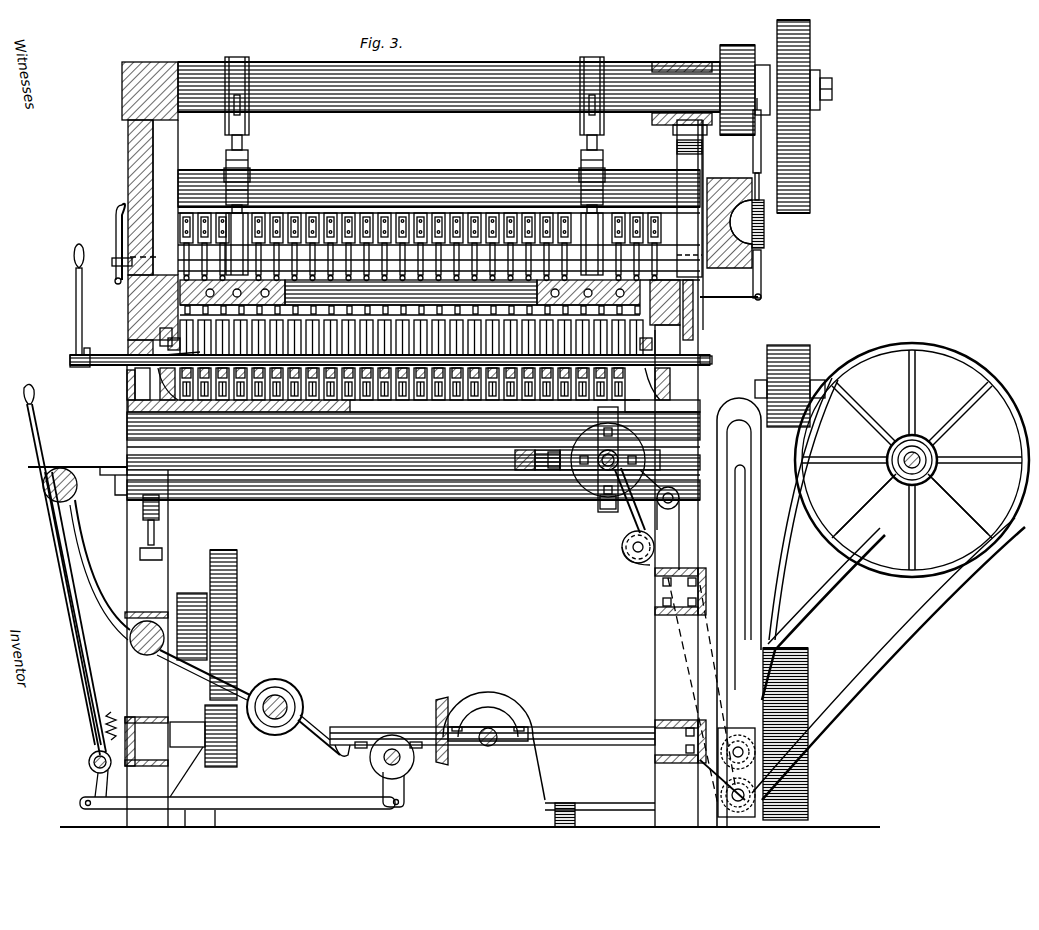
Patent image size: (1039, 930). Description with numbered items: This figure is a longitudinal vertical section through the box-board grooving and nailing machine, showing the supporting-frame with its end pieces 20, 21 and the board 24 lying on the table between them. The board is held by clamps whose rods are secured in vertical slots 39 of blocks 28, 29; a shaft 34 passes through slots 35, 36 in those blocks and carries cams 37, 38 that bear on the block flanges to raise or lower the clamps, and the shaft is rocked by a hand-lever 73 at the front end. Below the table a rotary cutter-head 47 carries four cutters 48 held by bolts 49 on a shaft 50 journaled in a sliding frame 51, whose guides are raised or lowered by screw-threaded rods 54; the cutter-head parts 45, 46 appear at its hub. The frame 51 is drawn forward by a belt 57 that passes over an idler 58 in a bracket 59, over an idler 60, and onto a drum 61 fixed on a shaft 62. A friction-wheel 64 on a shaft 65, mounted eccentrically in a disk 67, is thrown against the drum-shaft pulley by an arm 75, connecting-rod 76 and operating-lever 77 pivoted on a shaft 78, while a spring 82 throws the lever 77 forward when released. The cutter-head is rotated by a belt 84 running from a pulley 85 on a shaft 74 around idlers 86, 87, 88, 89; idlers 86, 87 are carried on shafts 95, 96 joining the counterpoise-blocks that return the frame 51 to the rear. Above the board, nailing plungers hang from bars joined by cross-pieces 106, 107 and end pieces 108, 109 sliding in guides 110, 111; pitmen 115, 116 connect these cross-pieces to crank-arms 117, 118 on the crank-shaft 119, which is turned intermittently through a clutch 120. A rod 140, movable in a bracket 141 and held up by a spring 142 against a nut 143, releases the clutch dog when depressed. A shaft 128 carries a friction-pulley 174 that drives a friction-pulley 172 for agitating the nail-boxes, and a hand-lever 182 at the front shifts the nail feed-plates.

The end piece 20 is at (470, 444).
The end piece 21 is at (695, 473).
The board 24 is at (325, 412).
The block 28 is at (405, 337).
The block 29 is at (651, 336).
The shaft 34 is at (100, 364).
The slot 35 is at (188, 355).
The slot 36 is at (662, 384).
The cam 37 is at (156, 384).
The cam 38 is at (662, 403).
The slot 39 is at (712, 361).
The hub 45 is at (628, 460).
The arm 46 is at (608, 459).
The rotary cutter-head 47 is at (590, 482).
The cutter 48 is at (556, 472).
The bolt 49 is at (610, 460).
The shaft 50 is at (604, 510).
The frame 51 is at (528, 472).
The screw-threaded rod 54 is at (160, 532).
The belt 57 is at (405, 462).
The idler 58 is at (74, 488).
The bracket 59 is at (60, 538).
The idler 60 is at (165, 610).
The drum 61 is at (286, 682).
The shaft 62 is at (290, 700).
The friction-wheel 64 is at (490, 746).
The shaft 65 is at (378, 758).
The disk 67 is at (392, 756).
The hand lever 73 is at (77, 305).
The shaft 74 is at (930, 458).
The arm 75 is at (400, 783).
The connecting-rod 76 is at (262, 805).
The operating-lever 77 is at (72, 648).
The shaft 78 is at (88, 762).
The spring 82 is at (111, 712).
The belt 84 is at (782, 545).
The pulley 85 is at (893, 570).
The idler 86 is at (740, 745).
The idler 87 is at (732, 796).
The idler 88 is at (634, 555).
The idler 89 is at (660, 499).
The shaft 95 is at (795, 700).
The shaft 96 is at (738, 790).
The cross-piece 106 is at (537, 293).
The cross-piece 107 is at (375, 292).
The end piece 108 is at (135, 296).
The end piece 109 is at (700, 312).
The guide 110 is at (170, 338).
The guide 111 is at (677, 340).
The pitman 115 is at (246, 122).
The pitman 116 is at (584, 125).
The crank-arm 117 is at (250, 72).
The crank-arm 118 is at (606, 66).
The crank-shaft 119 is at (455, 108).
The clutch 120 is at (742, 148).
The shaft 128 is at (360, 727).
The rod 140 is at (753, 155).
The bracket 141 is at (722, 180).
The spring 142 is at (766, 232).
The nut 143 is at (739, 222).
The friction-pulley 172 is at (237, 612).
The friction-pulley 174 is at (212, 760).
The hand-lever 182 is at (118, 236).